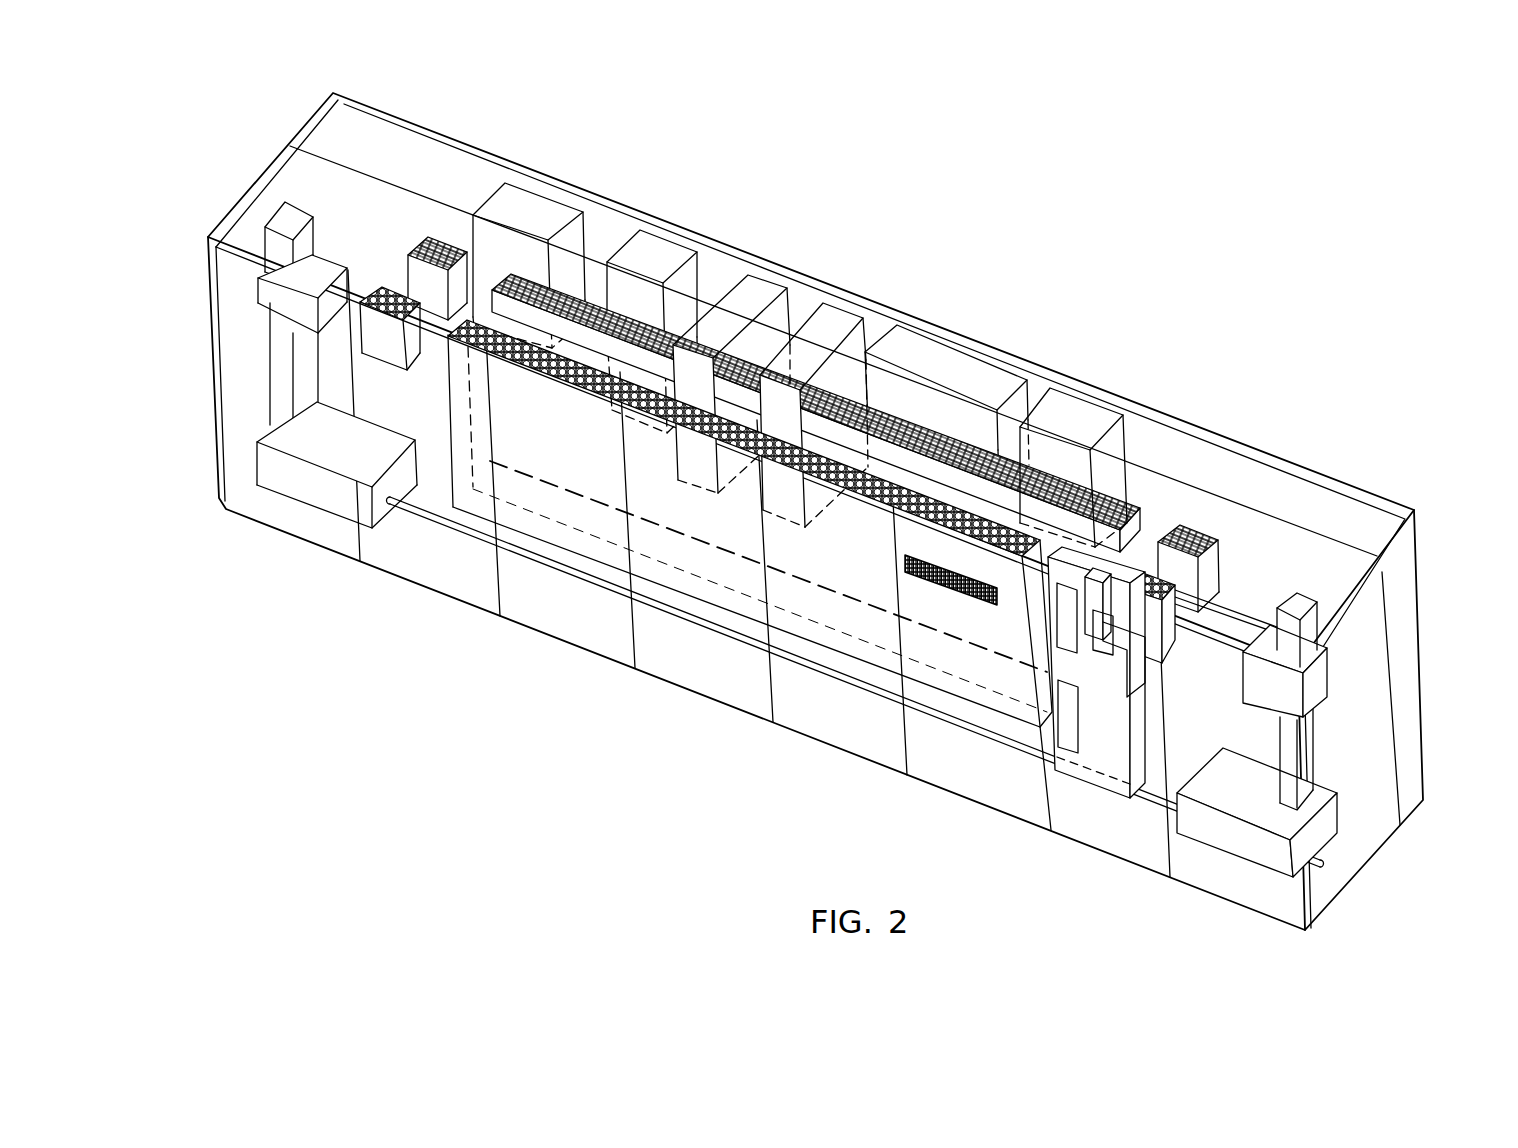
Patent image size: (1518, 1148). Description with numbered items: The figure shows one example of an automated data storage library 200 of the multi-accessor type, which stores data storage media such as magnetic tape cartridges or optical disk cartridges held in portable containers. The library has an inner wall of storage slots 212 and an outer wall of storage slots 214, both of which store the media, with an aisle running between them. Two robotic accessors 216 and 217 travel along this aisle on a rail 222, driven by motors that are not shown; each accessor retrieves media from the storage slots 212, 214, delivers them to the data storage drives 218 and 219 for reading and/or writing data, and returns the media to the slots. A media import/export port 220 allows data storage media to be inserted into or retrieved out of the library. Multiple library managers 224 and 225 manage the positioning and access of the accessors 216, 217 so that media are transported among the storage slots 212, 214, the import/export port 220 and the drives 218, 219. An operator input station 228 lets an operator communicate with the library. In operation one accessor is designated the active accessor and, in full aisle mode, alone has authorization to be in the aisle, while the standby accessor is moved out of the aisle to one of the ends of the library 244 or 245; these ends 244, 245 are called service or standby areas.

The automated data storage library 200 is at (994, 266).
The end of the library 244 is at (243, 197).
The end of the library 245 is at (1414, 548).
The accessor 216 is at (277, 307).
The accessor 217 is at (1270, 682).
The library manager 224 is at (552, 213).
The operator input station 228 is at (675, 243).
The inner wall of storage slots 212 is at (603, 305).
The data storage drive 218 is at (752, 290).
The data storage drive 219 is at (840, 316).
The library manager 225 is at (1078, 409).
The outer wall of storage slots 214 is at (447, 462).
The rail 222 is at (723, 630).
The media import/export port 220 is at (1110, 733).